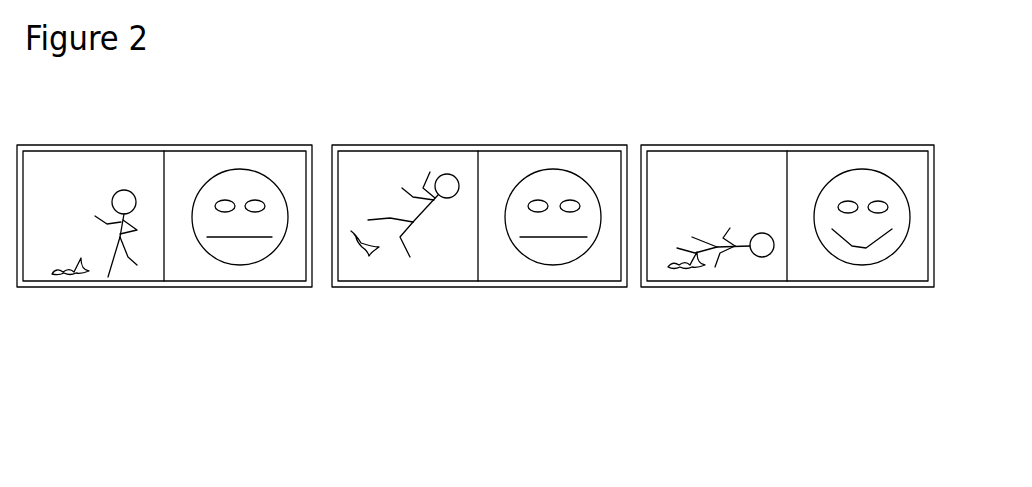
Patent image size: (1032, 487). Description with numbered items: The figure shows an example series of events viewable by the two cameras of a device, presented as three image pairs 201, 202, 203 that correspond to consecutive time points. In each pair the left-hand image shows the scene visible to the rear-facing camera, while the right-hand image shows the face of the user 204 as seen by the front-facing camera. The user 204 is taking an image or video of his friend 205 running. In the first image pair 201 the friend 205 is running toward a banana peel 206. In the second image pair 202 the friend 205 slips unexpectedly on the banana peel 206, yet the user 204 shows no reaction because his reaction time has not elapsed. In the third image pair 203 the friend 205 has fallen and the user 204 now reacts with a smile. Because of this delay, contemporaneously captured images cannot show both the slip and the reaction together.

The first image pair 201 is at (141, 373).
The second image pair 202 is at (474, 373).
The third image pair 203 is at (788, 378).
The user 204 is at (241, 172).
The friend 205 is at (124, 190).
The banana peel 206 is at (76, 274).